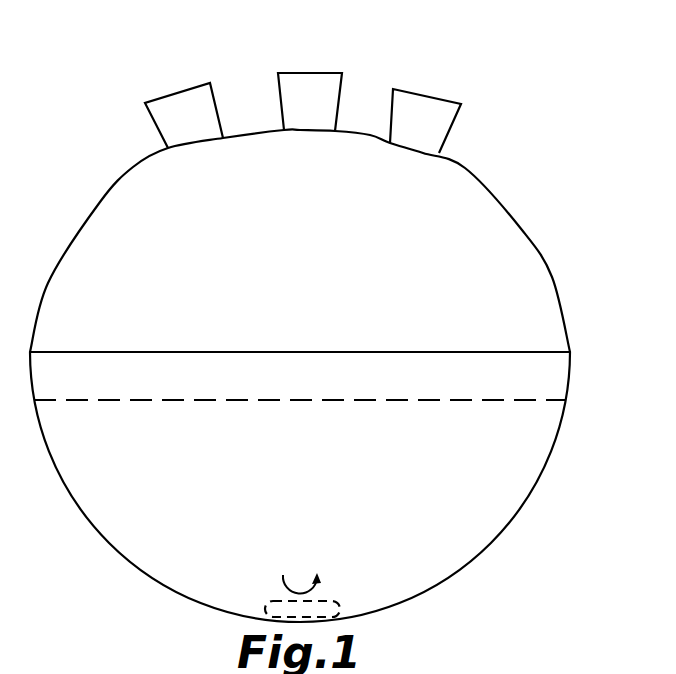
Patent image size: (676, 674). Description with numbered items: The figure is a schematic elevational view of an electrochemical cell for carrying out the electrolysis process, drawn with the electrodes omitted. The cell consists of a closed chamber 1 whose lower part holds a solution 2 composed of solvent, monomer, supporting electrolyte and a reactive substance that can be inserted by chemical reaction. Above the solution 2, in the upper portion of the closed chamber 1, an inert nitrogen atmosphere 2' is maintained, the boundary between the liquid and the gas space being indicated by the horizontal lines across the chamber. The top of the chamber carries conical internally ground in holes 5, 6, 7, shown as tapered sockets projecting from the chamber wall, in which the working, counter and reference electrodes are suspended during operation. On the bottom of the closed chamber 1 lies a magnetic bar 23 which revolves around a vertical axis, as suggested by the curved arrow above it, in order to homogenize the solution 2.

The closed chamber 1 is at (552, 277).
The solution 2 is at (323, 432).
The inert nitrogen atmosphere 2' is at (320, 257).
The conical internally ground in hole 5 is at (428, 115).
The conical internally ground in hole 6 is at (318, 92).
The conical internally ground in hole 7 is at (198, 98).
The magnetic bar 23 is at (342, 607).